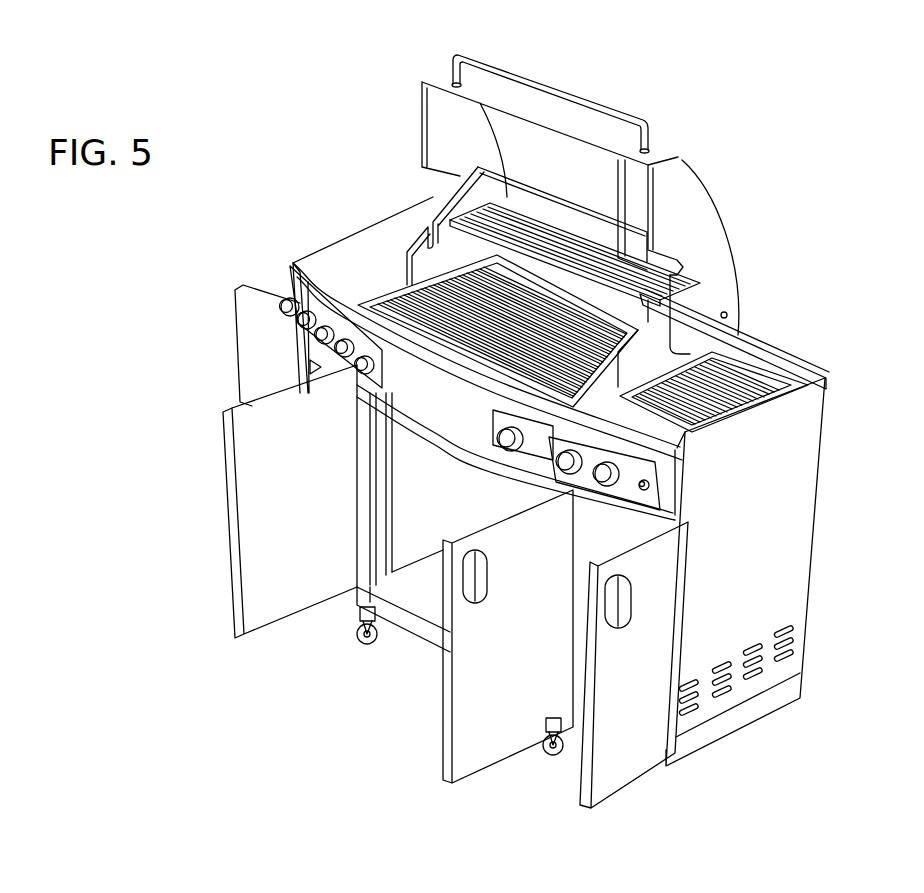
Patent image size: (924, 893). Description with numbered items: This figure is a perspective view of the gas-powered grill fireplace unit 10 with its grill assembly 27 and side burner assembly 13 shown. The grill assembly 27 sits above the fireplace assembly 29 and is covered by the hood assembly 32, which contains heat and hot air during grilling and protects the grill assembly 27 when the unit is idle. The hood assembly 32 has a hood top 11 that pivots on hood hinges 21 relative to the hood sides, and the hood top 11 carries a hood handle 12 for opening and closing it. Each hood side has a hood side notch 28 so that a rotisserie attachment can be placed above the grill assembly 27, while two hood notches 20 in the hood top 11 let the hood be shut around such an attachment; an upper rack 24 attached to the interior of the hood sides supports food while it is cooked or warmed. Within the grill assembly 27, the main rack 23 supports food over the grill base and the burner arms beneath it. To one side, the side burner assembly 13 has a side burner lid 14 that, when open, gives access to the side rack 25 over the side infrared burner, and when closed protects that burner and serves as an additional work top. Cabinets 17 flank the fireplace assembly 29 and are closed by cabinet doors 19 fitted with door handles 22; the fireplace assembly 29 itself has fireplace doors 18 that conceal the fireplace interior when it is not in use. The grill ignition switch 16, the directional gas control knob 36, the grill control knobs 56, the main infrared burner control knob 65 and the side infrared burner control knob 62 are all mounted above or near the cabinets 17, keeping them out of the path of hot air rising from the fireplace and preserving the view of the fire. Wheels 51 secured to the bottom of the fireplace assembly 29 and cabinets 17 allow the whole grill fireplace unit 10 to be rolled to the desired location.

The grill fireplace unit 10 is at (314, 84).
The hood top 11 is at (663, 143).
The hood handle 12 is at (562, 92).
The side burner assembly 13 is at (781, 394).
The side burner lid 14 is at (765, 350).
The grill ignition switch 16 is at (651, 488).
The cabinets 17 is at (310, 367).
The fireplace doors 18 is at (250, 505).
The cabinet doors 19 is at (243, 322).
The hood notches 20 is at (677, 257).
The hood hinges 21 is at (727, 316).
The door handles 22 is at (487, 580).
The main rack 23 is at (403, 308).
The warming rack 24 is at (490, 222).
The side rack 25 is at (727, 400).
The grill assembly 27 is at (418, 258).
The hood side notch 28 is at (663, 348).
The fireplace assembly 29 is at (420, 586).
The hood assembly 32 is at (699, 164).
The directional gas control knob 36 is at (500, 440).
The wheels 51 is at (358, 643).
The grill control knob 56 is at (307, 311).
The side infrared burner control knob 62 is at (598, 478).
The main infrared burner control knob 65 is at (560, 467).